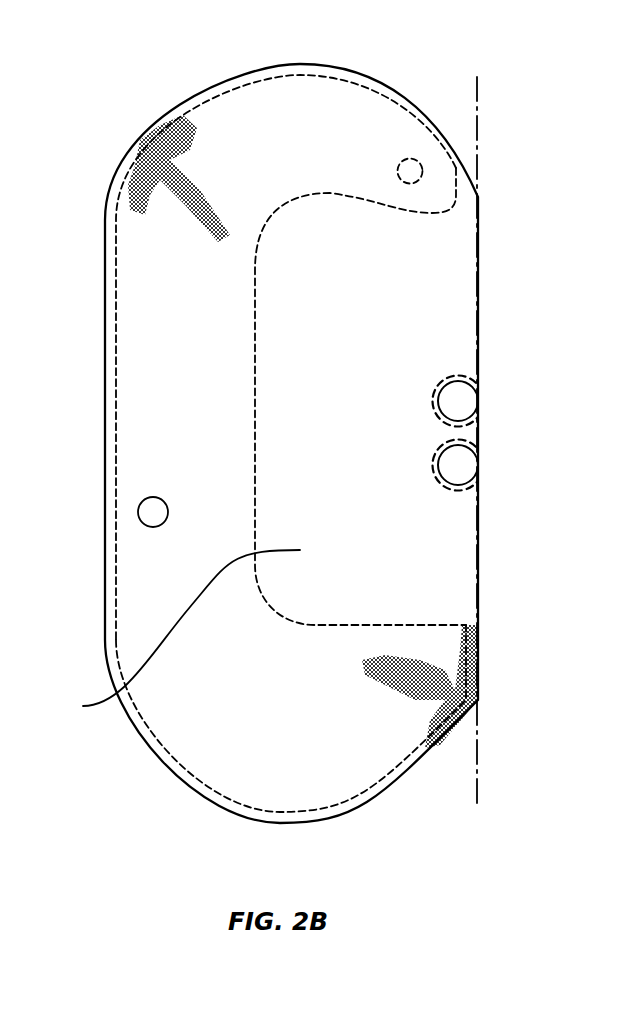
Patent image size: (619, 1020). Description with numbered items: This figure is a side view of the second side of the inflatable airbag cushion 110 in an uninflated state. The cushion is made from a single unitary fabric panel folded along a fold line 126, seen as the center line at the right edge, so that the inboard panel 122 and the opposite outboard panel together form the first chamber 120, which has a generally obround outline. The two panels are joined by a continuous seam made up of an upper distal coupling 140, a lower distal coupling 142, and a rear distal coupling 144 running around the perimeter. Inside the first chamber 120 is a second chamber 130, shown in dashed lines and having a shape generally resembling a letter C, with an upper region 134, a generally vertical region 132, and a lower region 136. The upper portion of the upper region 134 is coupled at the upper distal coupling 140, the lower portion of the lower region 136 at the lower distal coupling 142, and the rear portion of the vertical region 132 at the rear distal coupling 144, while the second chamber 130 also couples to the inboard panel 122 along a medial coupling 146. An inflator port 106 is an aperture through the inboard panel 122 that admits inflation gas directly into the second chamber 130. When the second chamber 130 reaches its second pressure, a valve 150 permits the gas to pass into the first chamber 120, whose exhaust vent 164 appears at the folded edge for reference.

The inflatable airbag cushion 110 is at (535, 85).
The inflator port 106 is at (140, 503).
The first chamber 120 is at (347, 440).
The inboard panel 122 is at (173, 636).
The fold line 126 is at (478, 765).
The second chamber 130 is at (197, 177).
The generally vertical region 132 is at (187, 430).
The upper region 134 is at (292, 138).
The lower region 136 is at (300, 732).
The upper distal coupling 140 is at (183, 112).
The lower distal coupling 142 is at (350, 802).
The rear distal coupling 144 is at (117, 265).
The medial coupling 146 is at (373, 202).
The valve 150 is at (455, 165).
The exhaust vent 164 is at (498, 433).